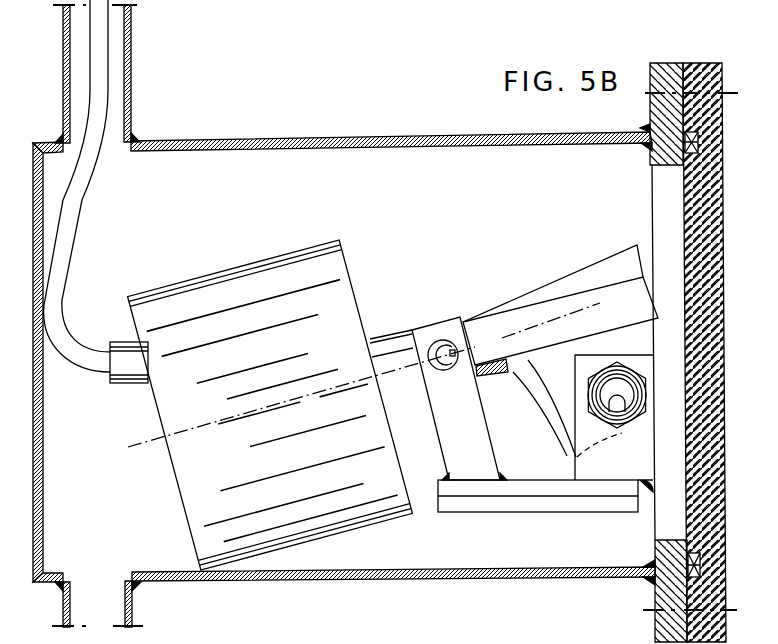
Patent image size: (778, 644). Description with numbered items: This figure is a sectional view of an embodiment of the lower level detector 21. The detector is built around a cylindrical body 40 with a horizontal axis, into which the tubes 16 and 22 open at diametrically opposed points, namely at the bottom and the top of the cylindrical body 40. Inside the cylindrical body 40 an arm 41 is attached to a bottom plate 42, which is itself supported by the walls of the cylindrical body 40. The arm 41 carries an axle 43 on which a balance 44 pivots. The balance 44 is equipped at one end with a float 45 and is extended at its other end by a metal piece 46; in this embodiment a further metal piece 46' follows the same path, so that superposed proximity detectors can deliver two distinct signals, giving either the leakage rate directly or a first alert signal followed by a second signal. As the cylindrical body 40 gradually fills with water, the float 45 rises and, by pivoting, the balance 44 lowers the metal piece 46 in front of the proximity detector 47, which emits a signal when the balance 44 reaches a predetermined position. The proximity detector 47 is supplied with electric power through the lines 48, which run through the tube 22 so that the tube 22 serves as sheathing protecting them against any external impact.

The tube 16 is at (133, 613).
The level detector 21 is at (30, 455).
The tube 22 is at (132, 69).
The cylindrical body 40 is at (360, 583).
The arm 41 is at (475, 436).
The bottom plate 42 is at (583, 504).
The axle 43 is at (443, 350).
The balance 44 is at (392, 279).
The float 45 is at (288, 292).
The metal piece 46 is at (560, 308).
The metal piece 46' is at (553, 283).
The proximity detector 47 is at (578, 456).
The lines 48 is at (86, 189).